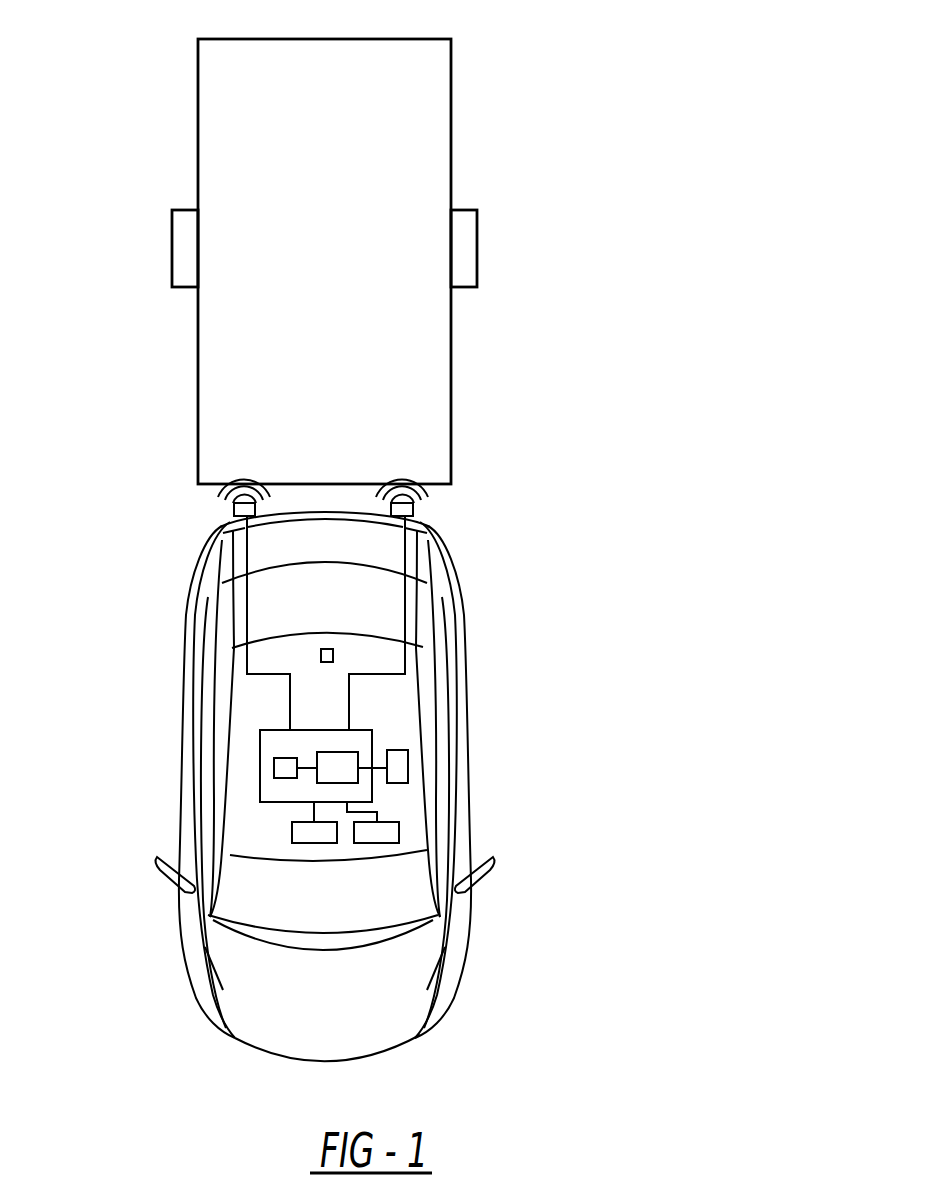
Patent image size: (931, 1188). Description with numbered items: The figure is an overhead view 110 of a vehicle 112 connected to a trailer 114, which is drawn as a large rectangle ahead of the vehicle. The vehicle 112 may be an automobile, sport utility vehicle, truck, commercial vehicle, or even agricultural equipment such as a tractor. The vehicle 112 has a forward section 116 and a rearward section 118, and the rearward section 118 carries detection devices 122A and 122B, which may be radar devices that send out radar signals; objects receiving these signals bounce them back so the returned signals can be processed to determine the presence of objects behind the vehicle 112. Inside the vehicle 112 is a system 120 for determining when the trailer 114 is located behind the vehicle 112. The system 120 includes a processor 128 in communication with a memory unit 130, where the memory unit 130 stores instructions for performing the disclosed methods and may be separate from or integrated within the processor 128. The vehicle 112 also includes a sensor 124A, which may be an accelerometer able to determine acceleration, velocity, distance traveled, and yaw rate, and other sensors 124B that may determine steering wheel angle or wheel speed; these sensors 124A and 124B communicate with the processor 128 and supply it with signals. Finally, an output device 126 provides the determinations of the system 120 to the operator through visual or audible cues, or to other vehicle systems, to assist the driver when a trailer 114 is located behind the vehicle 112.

The overhead view 110 is at (578, 217).
The vehicle 112 is at (451, 1009).
The trailer 114 is at (453, 114).
The forward section 116 is at (240, 1042).
The rearward section 118 is at (207, 546).
The system 120 is at (370, 730).
The detection device 122A is at (414, 511).
The detection device 122B is at (234, 511).
The sensor 124A is at (410, 760).
The other sensors 124B is at (400, 828).
The output device 126 is at (292, 832).
The processor 128 is at (323, 752).
The memory unit 130 is at (274, 768).